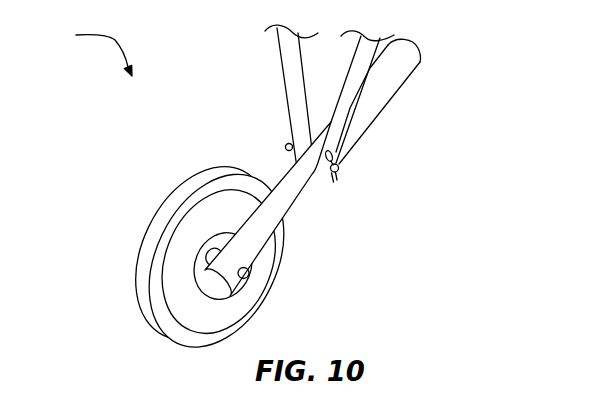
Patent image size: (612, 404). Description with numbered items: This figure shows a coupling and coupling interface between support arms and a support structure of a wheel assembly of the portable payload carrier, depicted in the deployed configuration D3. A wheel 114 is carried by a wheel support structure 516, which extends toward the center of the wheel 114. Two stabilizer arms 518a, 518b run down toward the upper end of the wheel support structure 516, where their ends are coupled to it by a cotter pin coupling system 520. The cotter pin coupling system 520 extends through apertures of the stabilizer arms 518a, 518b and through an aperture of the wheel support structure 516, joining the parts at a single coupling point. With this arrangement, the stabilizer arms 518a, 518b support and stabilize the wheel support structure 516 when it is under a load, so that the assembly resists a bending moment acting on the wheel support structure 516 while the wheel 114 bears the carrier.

The wheel 114 is at (180, 267).
The wheel support structure 516 is at (296, 196).
The stabilizer arm 518a is at (293, 78).
The stabilizer arm 518b is at (341, 112).
The cotter pin coupling system 520 is at (357, 172).
The deployed configuration D3 is at (88, 51).